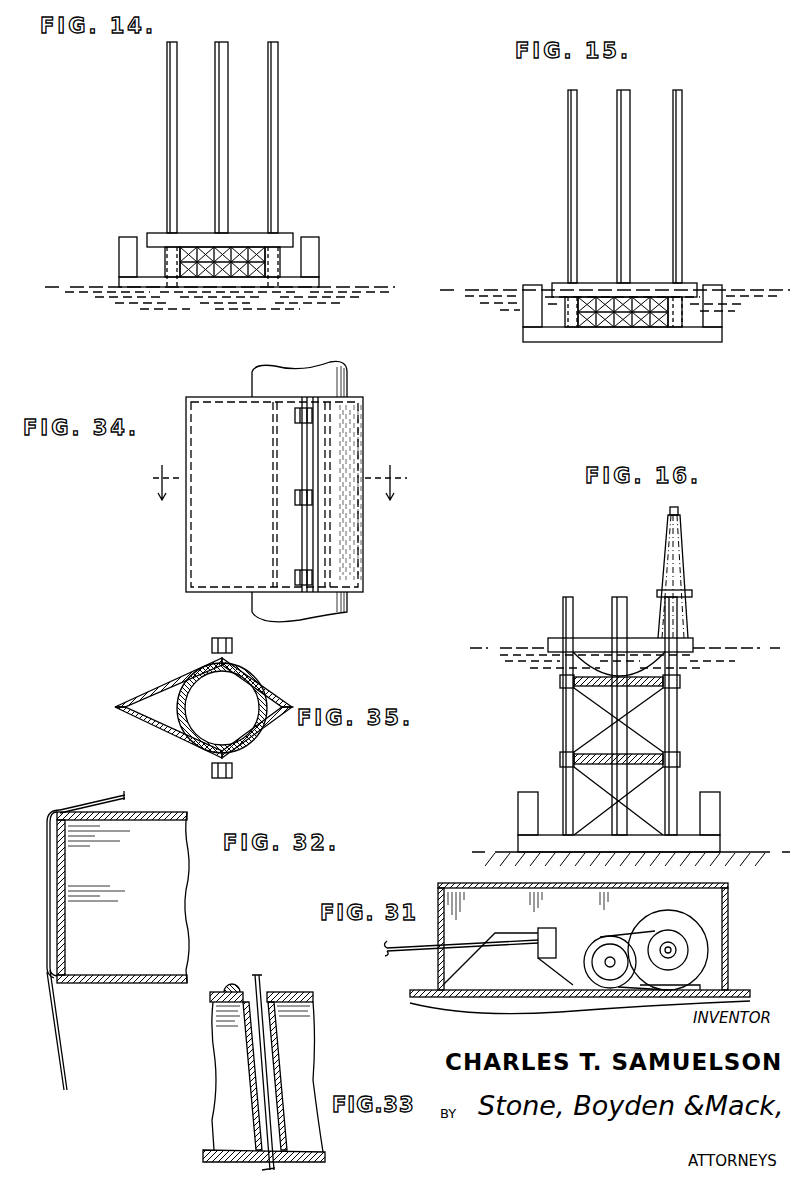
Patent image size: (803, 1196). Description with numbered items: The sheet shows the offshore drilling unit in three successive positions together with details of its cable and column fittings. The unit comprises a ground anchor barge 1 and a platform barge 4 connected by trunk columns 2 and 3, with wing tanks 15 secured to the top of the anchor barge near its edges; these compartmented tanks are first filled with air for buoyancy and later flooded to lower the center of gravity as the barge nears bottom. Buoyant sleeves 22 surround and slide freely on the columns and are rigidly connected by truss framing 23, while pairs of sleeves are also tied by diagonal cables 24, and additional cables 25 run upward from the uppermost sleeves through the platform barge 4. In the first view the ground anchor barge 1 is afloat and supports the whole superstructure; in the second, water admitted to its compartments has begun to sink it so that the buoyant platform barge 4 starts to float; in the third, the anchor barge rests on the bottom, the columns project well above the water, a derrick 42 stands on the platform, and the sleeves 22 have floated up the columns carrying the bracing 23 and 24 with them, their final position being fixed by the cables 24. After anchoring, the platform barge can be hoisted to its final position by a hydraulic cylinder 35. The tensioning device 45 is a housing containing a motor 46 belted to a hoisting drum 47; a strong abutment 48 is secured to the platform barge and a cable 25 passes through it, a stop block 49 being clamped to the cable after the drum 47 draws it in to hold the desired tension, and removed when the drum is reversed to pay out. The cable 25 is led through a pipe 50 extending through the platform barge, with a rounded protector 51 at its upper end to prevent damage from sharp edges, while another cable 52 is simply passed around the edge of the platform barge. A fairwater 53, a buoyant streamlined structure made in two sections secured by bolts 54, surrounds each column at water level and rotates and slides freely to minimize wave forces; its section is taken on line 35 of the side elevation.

In FIG. 14, the ground anchor barge 1 is at (319, 283).
In FIG. 15, the ground anchor barge 1 is at (714, 342).
In FIG. 16, the ground anchor barge 1 is at (690, 835).
In FIG. 14, the trunk column 2 is at (167, 147).
In FIG. 15, the trunk column 2 is at (568, 197).
In FIG. 34, the trunk column 2 is at (345, 388).
In FIG. 35, the trunk column 2 is at (222, 708).
In FIG. 16, the trunk column 2 is at (563, 720).
In FIG. 14, the trunk column 3 is at (215, 98).
In FIG. 15, the trunk column 3 is at (617, 198).
In FIG. 16, the trunk column 3 is at (620, 777).
In FIG. 14, the platform barge 4 is at (238, 236).
In FIG. 15, the platform barge 4 is at (648, 283).
In FIG. 16, the platform barge 4 is at (635, 640).
In FIG. 32, the platform barge 4 is at (182, 922).
In FIG. 31, the platform barge 4 is at (558, 1000).
In FIG. 14, the wing tank 15 is at (319, 252).
In FIG. 15, the wing tank 15 is at (530, 285).
In FIG. 16, the wing tank 15 is at (530, 778).
In FIG. 14, the sleeve 22 is at (165, 270).
In FIG. 15, the sleeve 22 is at (560, 330).
In FIG. 16, the sleeve 22 is at (560, 683).
In FIG. 14, the truss framing 23 is at (205, 245).
In FIG. 15, the truss framing 23 is at (630, 330).
In FIG. 16, the truss framing 23 is at (598, 688).
In FIG. 16, the diagonal cable 24 is at (655, 698).
In FIG. 16, the cable 25 is at (578, 630).
In FIG. 33, the cable 25 is at (265, 992).
In FIG. 31, the cable 25 is at (468, 945).
In FIG. 34, the hydraulic cylinder 35 is at (266, 478).
In FIG. 16, the derrick 42 is at (690, 575).
In FIG. 31, the tensioning device 45 is at (728, 915).
In FIG. 31, the motor 46 is at (690, 922).
In FIG. 31, the hoisting drum 47 is at (612, 945).
In FIG. 31, the abutment 48 is at (505, 933).
In FIG. 31, the stop block 49 is at (550, 930).
In FIG. 33, the pipe 50 is at (280, 1072).
In FIG. 32, the rounded protector 51 is at (62, 810).
In FIG. 33, the rounded protector 51 is at (233, 984).
In FIG. 32, the cable 52 is at (50, 922).
In FIG. 34, the fairwater 53 is at (200, 545).
In FIG. 35, the fairwater 53 is at (172, 678).
In FIG. 34, the bolt 54 is at (295, 500).
In FIG. 35, the bolt 54 is at (232, 645).